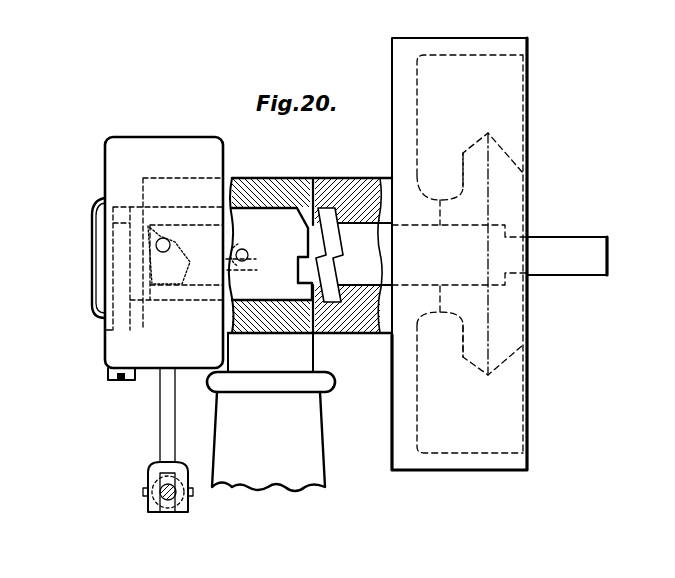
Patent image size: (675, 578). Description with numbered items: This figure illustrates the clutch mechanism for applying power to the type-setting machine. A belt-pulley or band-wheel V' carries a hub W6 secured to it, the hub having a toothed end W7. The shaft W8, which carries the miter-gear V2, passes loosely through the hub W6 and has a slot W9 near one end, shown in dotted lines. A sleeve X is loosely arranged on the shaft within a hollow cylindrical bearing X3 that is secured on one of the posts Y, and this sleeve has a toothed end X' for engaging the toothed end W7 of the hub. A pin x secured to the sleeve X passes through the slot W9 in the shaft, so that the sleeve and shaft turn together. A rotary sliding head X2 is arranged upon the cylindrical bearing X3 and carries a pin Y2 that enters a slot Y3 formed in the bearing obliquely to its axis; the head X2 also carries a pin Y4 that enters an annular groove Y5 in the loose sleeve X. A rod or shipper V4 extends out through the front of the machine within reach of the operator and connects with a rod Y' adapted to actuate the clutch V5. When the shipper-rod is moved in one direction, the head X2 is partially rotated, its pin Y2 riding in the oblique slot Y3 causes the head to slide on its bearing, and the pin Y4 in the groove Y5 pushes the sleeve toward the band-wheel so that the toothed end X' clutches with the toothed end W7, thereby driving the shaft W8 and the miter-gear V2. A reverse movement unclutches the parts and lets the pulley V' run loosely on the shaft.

The annular groove Y5 is at (120, 207).
The pin Y2 is at (156, 245).
The slot Y3 is at (180, 258).
The pin x is at (236, 259).
The rotary sliding head X2 is at (108, 338).
The pin Y4 is at (117, 381).
The slot W9 is at (244, 262).
The rod Y' is at (173, 440).
The post Y is at (271, 412).
The rod or shipper V4 is at (167, 496).
The cylindrical bearing X3 is at (310, 244).
The clutch V5 is at (324, 178).
The toothed end X' is at (272, 254).
The sleeve X is at (253, 267).
The toothed end W7 is at (329, 255).
The hub W6 is at (352, 269).
The belt-pulley V' is at (459, 254).
The miter-gear V2 is at (505, 182).
The shaft W8 is at (567, 256).